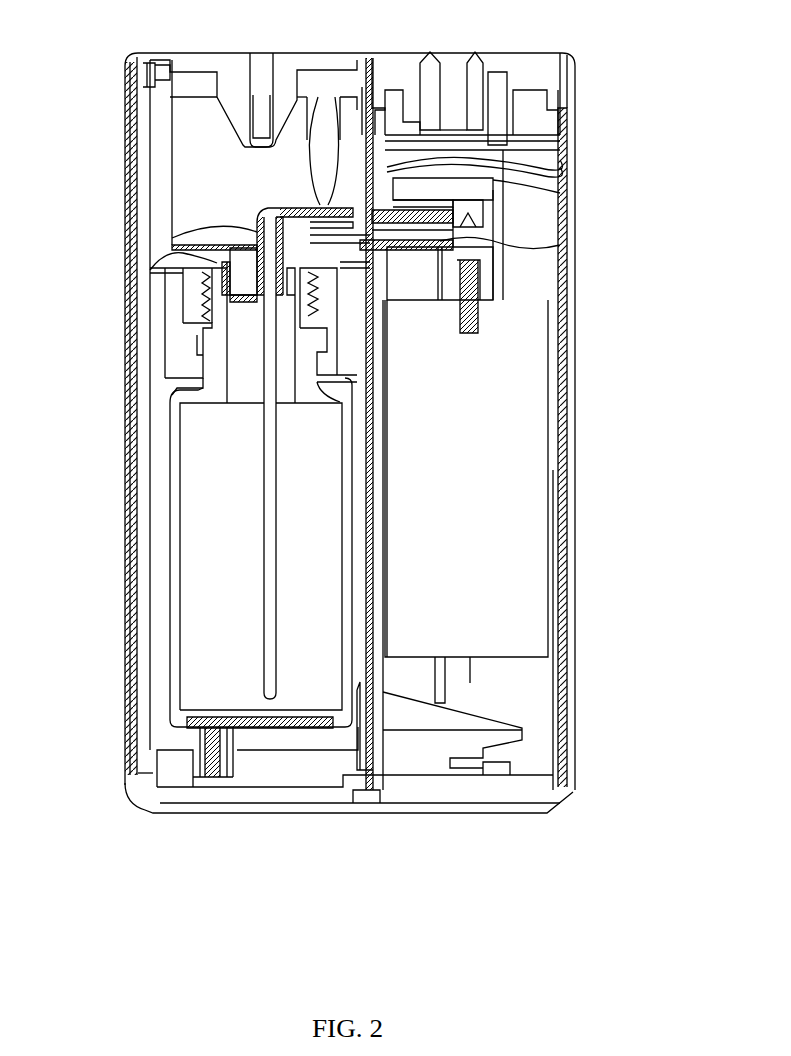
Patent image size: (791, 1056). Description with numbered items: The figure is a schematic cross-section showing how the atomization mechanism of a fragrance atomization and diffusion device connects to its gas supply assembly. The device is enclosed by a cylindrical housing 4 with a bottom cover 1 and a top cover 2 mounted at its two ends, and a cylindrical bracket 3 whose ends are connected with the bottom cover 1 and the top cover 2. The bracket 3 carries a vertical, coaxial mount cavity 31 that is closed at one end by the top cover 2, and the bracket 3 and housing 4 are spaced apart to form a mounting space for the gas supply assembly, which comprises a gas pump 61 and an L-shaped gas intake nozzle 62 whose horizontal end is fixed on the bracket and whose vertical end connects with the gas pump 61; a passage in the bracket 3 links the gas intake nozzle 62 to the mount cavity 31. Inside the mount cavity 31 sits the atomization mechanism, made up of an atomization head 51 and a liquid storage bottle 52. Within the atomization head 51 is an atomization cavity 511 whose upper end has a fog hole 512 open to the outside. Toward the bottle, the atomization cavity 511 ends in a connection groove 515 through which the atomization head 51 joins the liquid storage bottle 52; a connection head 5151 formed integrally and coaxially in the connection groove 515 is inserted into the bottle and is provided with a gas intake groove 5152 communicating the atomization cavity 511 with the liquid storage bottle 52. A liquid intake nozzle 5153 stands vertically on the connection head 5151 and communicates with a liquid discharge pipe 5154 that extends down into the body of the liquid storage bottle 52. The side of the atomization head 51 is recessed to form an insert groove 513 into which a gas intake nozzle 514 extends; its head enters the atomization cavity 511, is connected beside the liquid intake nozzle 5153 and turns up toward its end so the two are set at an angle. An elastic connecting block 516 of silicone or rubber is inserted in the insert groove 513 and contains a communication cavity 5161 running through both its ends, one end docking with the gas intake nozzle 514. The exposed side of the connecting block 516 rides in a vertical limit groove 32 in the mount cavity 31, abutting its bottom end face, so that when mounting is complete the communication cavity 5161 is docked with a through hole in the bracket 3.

The bottom cover 1 is at (480, 793).
The top cover 2 is at (234, 66).
The bracket 3 is at (123, 187).
The housing 4 is at (123, 219).
The mount cavity 31 is at (165, 400).
The limit groove 32 is at (538, 135).
The atomization head 51 is at (165, 152).
The liquid storage bottle 52 is at (170, 465).
The gas pump 61 is at (500, 387).
The gas intake nozzle 62 is at (520, 179).
The atomization cavity 511 is at (183, 119).
The fog hole 512 is at (263, 69).
The insert groove 513 is at (318, 97).
The gas intake nozzle 514 is at (333, 205).
The connection groove 515 is at (242, 317).
The connecting block 516 is at (457, 149).
The connection head 5151 is at (180, 283).
The gas intake groove 5152 is at (175, 262).
The liquid intake nozzle 5153 is at (165, 245).
The liquid discharge pipe 5154 is at (253, 349).
The communication cavity 5161 is at (490, 239).